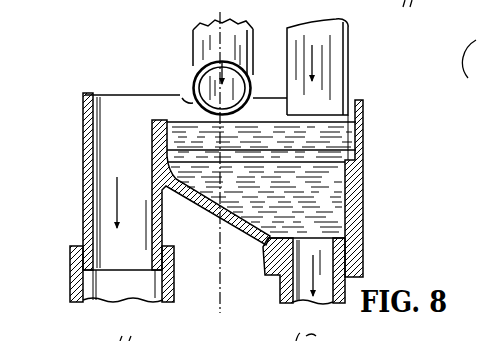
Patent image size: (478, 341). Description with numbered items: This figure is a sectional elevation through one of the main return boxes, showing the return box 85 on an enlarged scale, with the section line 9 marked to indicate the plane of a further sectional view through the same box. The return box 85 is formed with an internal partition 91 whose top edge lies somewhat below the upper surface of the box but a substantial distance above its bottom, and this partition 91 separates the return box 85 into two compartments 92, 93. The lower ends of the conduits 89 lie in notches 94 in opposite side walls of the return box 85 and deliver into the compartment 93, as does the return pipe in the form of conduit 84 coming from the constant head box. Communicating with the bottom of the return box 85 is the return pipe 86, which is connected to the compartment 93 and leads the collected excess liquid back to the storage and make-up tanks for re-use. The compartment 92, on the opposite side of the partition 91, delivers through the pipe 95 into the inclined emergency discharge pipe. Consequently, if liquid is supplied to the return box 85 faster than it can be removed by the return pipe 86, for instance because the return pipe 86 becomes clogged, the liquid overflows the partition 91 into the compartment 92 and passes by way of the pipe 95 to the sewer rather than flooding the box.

The conduit 84 is at (348, 72).
The return box 85 is at (81, 168).
The return pipe 86 is at (282, 295).
The conduits 89 is at (242, 53).
The internal partition 91 is at (158, 121).
The compartment 92 is at (117, 133).
The compartment 93 is at (264, 118).
The notches 94 is at (182, 98).
The pipe 95 is at (93, 285).
The section line 9- 9 is at (206, 10).